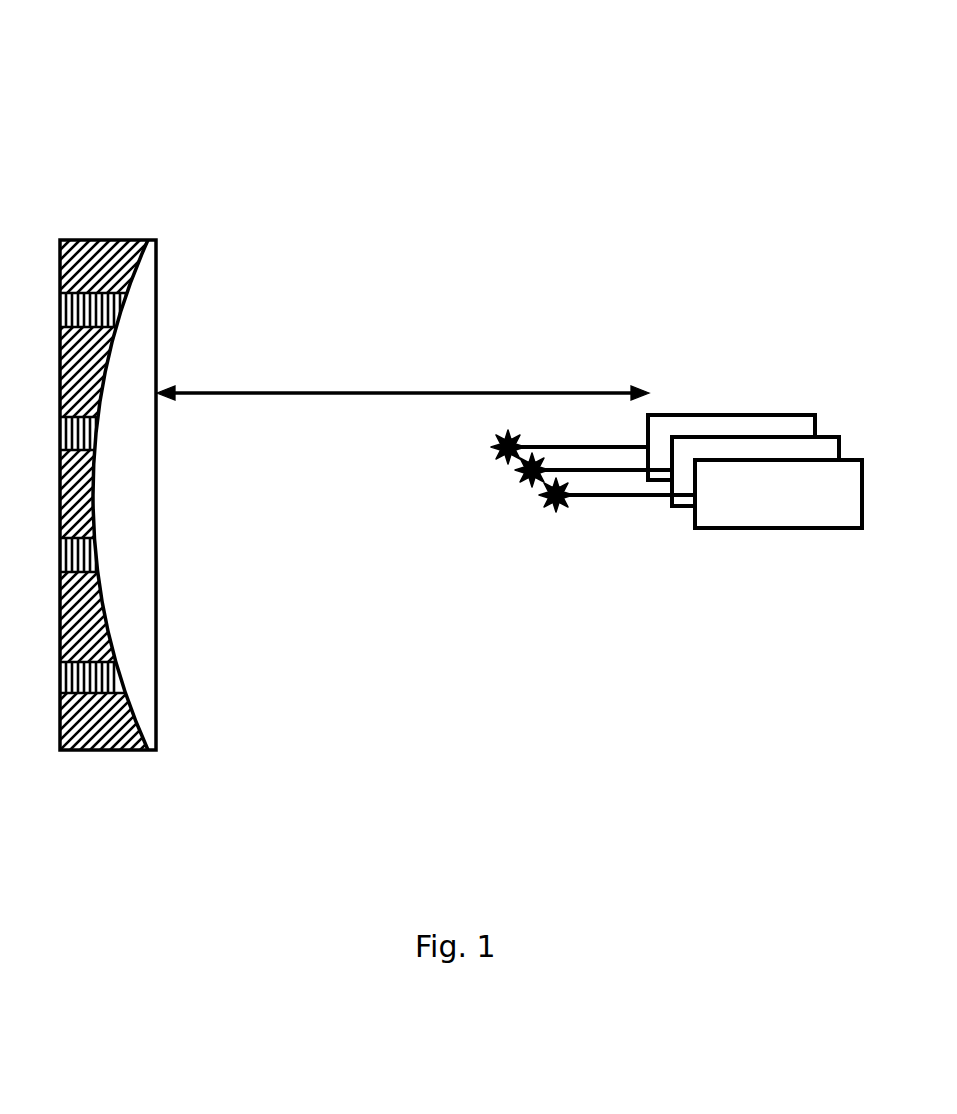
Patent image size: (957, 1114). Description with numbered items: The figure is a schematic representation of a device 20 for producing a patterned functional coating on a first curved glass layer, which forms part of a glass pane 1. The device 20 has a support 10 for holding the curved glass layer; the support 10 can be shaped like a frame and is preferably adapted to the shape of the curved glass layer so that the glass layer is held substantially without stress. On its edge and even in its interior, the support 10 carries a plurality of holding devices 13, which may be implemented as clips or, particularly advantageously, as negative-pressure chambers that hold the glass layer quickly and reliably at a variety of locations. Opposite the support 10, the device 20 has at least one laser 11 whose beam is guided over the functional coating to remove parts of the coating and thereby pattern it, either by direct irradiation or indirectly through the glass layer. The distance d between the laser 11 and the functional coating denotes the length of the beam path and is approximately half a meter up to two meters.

The glass pane 1 is at (163, 648).
The support 10 is at (124, 761).
The laser 11 is at (676, 471).
The holding devices 13 is at (130, 310).
The device 20 is at (398, 112).
The distance d is at (403, 370).